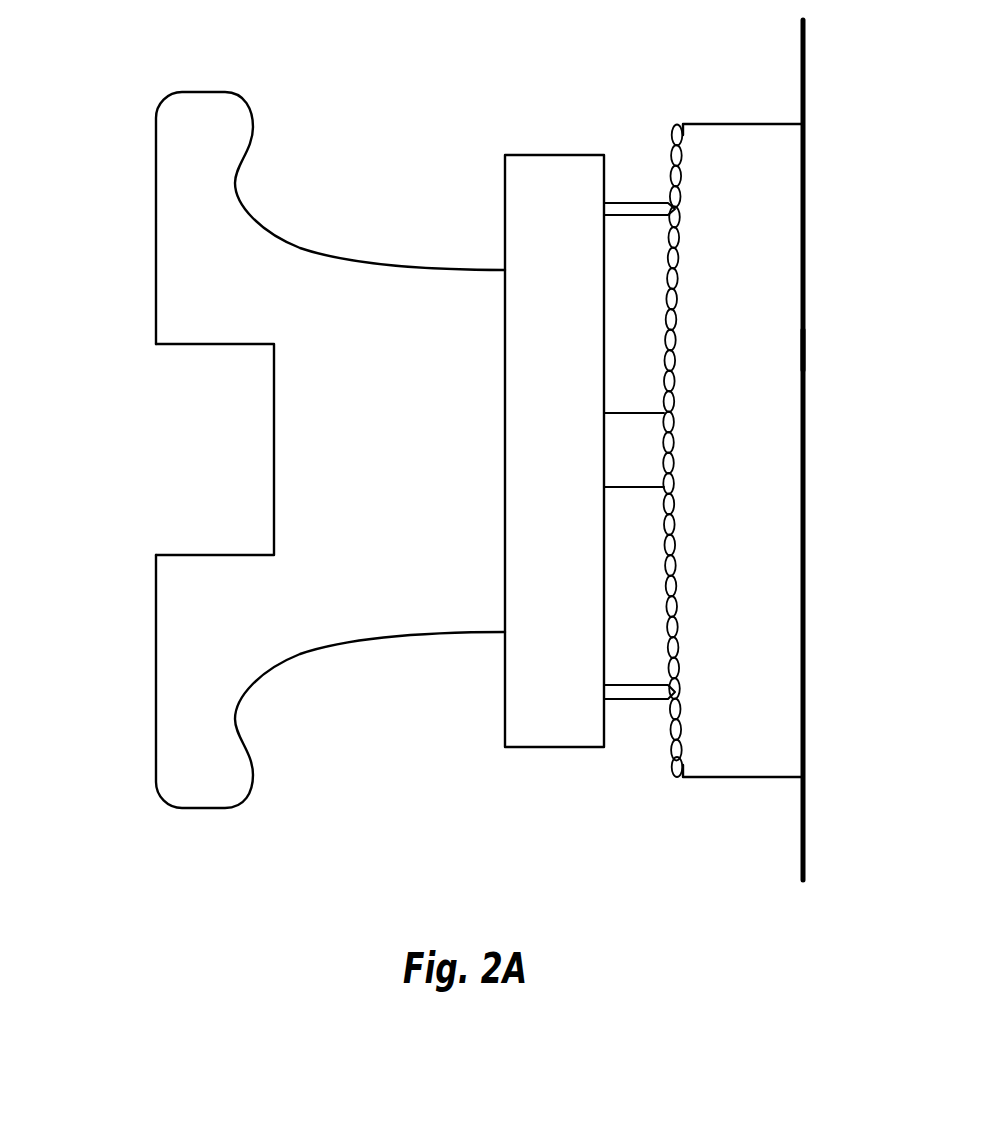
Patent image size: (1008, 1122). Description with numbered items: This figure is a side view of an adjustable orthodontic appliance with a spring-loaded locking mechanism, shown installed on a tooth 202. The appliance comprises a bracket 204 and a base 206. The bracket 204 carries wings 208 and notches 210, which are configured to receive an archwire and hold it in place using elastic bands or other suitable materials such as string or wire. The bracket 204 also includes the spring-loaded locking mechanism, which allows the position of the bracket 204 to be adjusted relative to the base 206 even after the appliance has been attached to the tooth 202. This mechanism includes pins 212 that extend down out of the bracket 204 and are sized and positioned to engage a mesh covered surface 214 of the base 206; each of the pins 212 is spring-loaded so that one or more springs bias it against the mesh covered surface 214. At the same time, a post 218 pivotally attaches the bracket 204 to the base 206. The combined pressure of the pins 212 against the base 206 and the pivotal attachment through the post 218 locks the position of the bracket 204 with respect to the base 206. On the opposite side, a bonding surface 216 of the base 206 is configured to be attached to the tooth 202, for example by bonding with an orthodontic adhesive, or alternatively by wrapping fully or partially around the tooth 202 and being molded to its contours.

The tooth 202 is at (878, 451).
The bracket 204 is at (418, 349).
The base 206 is at (757, 451).
The wings 208 is at (209, 107).
The notches 210 is at (205, 447).
The pins 212 is at (641, 207).
The mesh covered surface 214 is at (663, 140).
The bonding surface 216 is at (808, 348).
The post 218 is at (634, 427).